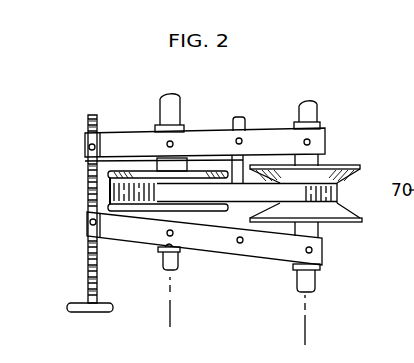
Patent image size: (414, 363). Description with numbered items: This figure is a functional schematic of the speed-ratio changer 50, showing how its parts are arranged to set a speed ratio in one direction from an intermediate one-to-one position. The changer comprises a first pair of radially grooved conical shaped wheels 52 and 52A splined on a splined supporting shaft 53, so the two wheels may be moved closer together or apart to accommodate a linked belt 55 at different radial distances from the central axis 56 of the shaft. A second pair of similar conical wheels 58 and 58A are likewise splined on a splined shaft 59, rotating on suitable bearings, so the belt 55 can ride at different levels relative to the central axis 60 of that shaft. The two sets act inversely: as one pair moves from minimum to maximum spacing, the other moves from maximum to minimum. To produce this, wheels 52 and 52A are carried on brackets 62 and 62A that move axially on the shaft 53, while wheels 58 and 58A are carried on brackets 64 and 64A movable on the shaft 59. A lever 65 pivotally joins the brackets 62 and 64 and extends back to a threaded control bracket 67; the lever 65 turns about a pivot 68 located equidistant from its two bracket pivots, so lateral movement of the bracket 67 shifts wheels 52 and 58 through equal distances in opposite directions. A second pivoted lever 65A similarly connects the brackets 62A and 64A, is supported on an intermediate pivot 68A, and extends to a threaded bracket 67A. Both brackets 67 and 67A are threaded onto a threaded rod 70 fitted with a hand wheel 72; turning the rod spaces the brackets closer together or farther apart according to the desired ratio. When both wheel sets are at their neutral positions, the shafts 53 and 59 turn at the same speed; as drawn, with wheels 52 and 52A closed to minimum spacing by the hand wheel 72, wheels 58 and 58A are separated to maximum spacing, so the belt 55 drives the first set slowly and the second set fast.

The speed-ratio changer 50 is at (100, 81).
The radially grooved conical shaped wheel 52 is at (200, 161).
The radially grooved conical shaped wheel 52A is at (168, 209).
The splined supporting shaft 53 is at (161, 263).
The linked belt 55 is at (232, 163).
The central axis 56 is at (165, 305).
The conical wheel 58 is at (336, 166).
The conical wheel 58A is at (350, 218).
The splined shaft 59 is at (317, 283).
The central axis 60 is at (299, 322).
The bracket 62 is at (176, 132).
The bracket 62A is at (173, 252).
The bracket 64 is at (322, 132).
The bracket 64A is at (322, 253).
The lever 65 is at (138, 137).
The second pivoted lever 65A is at (113, 228).
The threaded control bracket 67 is at (88, 147).
The threaded bracket 67A is at (87, 224).
The pivot 68 is at (242, 141).
The intermediate pivot 68A is at (243, 240).
The threaded rod 70 is at (87, 263).
The hand wheel 72 is at (88, 311).